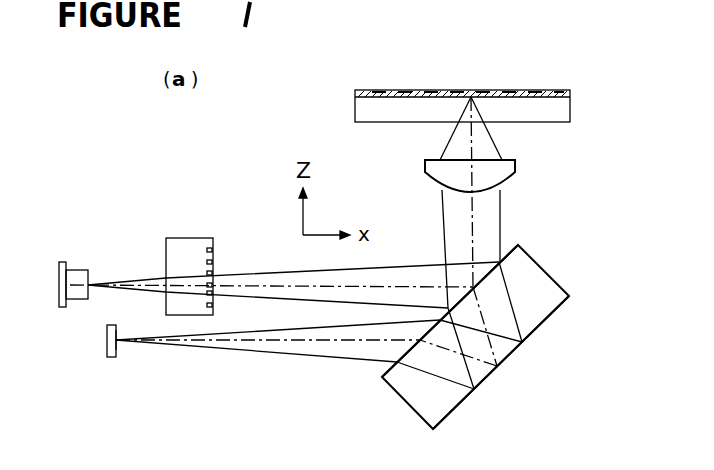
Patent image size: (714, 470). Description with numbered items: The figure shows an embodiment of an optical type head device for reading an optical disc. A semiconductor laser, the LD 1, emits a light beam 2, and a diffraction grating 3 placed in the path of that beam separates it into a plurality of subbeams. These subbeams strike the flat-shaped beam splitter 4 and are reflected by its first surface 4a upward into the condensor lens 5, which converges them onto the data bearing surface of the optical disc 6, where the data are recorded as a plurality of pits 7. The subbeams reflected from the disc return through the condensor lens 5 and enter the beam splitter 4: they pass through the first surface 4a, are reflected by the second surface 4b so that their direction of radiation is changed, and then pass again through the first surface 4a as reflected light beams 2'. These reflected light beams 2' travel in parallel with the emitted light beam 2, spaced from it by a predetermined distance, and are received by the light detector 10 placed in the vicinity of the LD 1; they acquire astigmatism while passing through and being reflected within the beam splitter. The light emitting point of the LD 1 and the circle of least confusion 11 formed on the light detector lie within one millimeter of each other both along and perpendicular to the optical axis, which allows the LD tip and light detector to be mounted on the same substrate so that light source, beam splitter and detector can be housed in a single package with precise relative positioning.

The semiconductor laser 1 is at (77, 268).
The light beam 2 is at (284, 266).
The reflected light beams 2' is at (278, 361).
The diffraction grating 3 is at (188, 238).
The beam splitter 4 is at (490, 317).
The first surface 4a is at (516, 246).
The second surface 4b is at (549, 317).
The condensor lens 5 is at (515, 170).
The optical disc 6 is at (570, 100).
The pits 7 is at (494, 91).
The light detector 10 is at (107, 348).
The circle of least confusion 11 is at (119, 343).